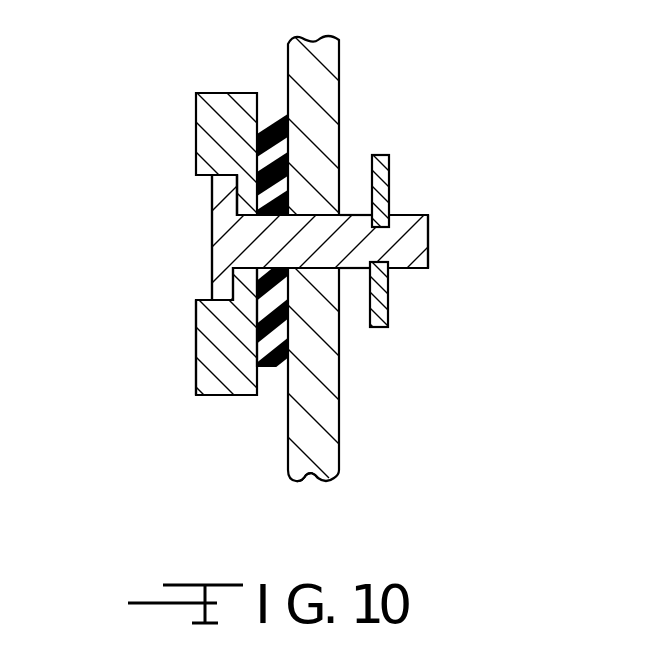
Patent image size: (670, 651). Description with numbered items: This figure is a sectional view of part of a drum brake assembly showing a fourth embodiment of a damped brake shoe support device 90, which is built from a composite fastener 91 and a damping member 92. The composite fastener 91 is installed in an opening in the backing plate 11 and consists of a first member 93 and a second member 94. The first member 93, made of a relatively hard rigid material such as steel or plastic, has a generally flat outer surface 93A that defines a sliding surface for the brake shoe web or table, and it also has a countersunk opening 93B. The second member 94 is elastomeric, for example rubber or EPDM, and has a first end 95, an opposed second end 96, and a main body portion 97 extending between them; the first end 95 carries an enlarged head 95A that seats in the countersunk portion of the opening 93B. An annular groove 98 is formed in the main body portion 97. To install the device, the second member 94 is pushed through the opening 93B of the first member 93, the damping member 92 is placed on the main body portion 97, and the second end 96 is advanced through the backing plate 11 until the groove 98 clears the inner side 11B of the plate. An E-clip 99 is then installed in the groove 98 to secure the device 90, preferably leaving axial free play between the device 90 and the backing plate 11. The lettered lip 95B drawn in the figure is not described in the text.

The backing plate 11 is at (312, 476).
The inner side of the backing plate 11B is at (341, 432).
The damped brake shoe support device 90 is at (138, 334).
The composite fastener 91 is at (195, 238).
The damping member 92 is at (265, 347).
The first member 93 is at (214, 397).
The outer surface 93A is at (197, 125).
The countersunk opening 93B is at (214, 226).
The second member 94 is at (347, 215).
The first end 95 is at (207, 261).
The enlarged head 95A is at (220, 279).
The upper seal lip 95B is at (232, 188).
The second end 96 is at (432, 236).
The main body portion 97 is at (356, 277).
The annular groove 98 is at (381, 207).
The E-clip 99 is at (378, 297).